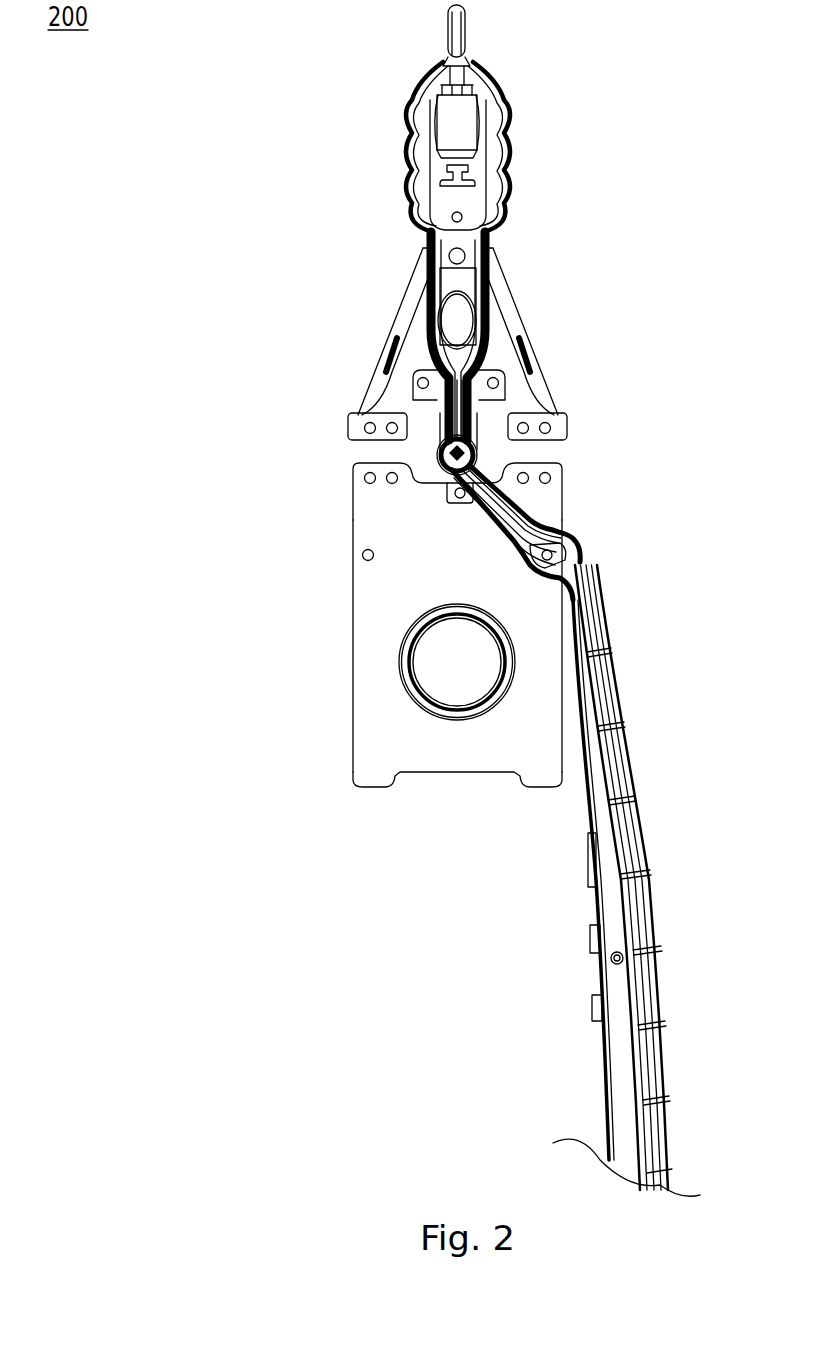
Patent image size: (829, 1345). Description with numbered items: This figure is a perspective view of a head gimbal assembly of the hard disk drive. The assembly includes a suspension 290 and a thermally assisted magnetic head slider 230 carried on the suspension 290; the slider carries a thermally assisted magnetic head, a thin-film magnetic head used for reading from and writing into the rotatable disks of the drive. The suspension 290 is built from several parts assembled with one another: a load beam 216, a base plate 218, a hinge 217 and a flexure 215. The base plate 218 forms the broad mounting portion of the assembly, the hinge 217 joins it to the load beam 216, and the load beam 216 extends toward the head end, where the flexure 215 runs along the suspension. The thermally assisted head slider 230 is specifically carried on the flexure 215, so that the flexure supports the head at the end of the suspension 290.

The thermally assisted magnetic head slider 230 is at (450, 128).
The flexure 215 is at (445, 291).
The load beam 216 is at (410, 352).
The suspension 290 is at (347, 412).
The hinge 217 is at (375, 452).
The base plate 218 is at (382, 583).